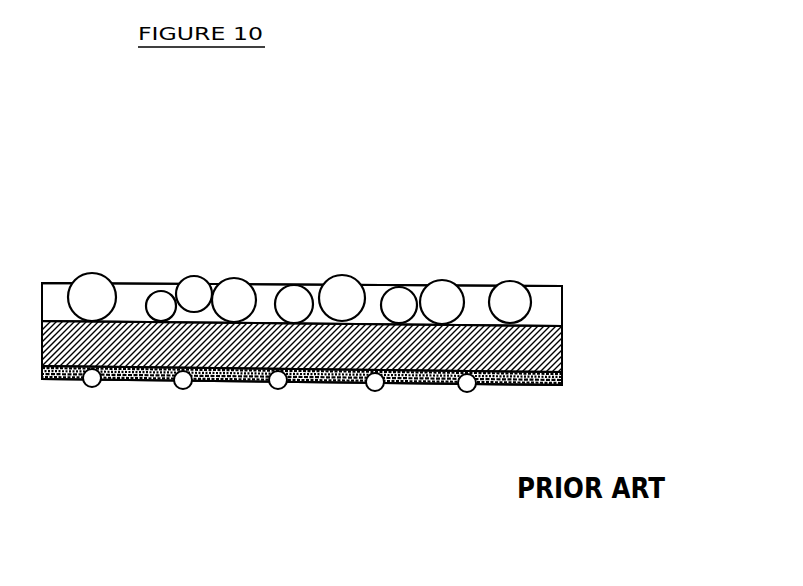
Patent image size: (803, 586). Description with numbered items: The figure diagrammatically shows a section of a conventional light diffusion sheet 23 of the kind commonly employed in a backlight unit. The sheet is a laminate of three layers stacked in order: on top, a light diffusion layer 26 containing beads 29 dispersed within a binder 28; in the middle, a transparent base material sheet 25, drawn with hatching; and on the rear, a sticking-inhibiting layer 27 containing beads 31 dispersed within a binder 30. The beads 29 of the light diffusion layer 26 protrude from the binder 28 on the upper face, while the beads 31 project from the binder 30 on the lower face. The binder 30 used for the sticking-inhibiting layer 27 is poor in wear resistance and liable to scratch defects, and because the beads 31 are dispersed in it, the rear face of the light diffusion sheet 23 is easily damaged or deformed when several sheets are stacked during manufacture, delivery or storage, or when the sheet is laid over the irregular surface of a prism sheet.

The light diffusion sheet 23 is at (323, 170).
The transparent base material sheet 25 is at (562, 352).
The light diffusion layer 26 is at (302, 304).
The sticking-inhibiting layer 27 is at (562, 378).
The binder 28 is at (130, 288).
The beads 29 is at (193, 280).
The binder 30 is at (305, 383).
The beads 31 is at (183, 380).